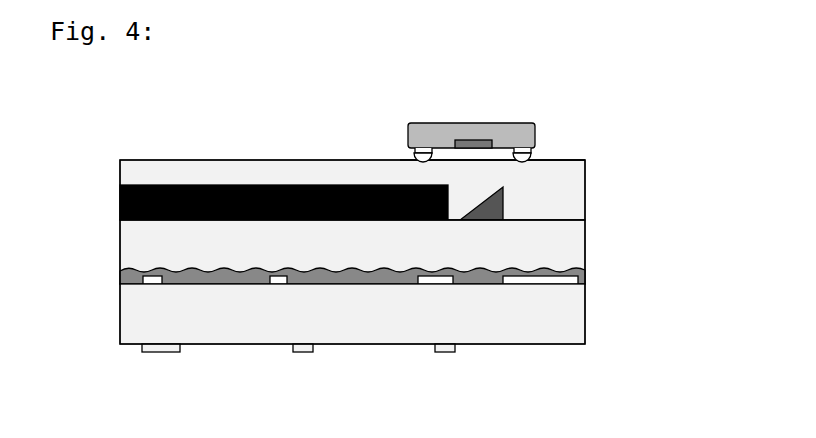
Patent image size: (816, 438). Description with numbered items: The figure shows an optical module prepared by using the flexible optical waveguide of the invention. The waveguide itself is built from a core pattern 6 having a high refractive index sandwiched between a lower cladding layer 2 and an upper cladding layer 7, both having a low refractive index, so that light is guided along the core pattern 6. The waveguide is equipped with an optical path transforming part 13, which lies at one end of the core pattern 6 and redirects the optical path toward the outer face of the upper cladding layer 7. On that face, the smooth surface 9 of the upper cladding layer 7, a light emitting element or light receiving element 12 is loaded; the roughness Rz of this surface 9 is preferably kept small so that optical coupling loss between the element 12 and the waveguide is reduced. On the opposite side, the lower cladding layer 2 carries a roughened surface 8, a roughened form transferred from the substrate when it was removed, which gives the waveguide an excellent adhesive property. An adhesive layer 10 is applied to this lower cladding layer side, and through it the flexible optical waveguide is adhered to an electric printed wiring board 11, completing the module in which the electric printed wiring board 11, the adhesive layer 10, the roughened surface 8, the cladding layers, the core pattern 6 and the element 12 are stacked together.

The lower cladding layer 2 is at (550, 235).
The core pattern 6 is at (260, 188).
The upper cladding layer 7 is at (540, 182).
The roughened surface 8 is at (560, 270).
The smooth surface 9 is at (545, 160).
The adhesive layer 10 is at (480, 282).
The electric printed wiring board 11 is at (612, 275).
The light emitting element or light receiving element 12 is at (507, 130).
The optical path transforming part 13 is at (490, 208).